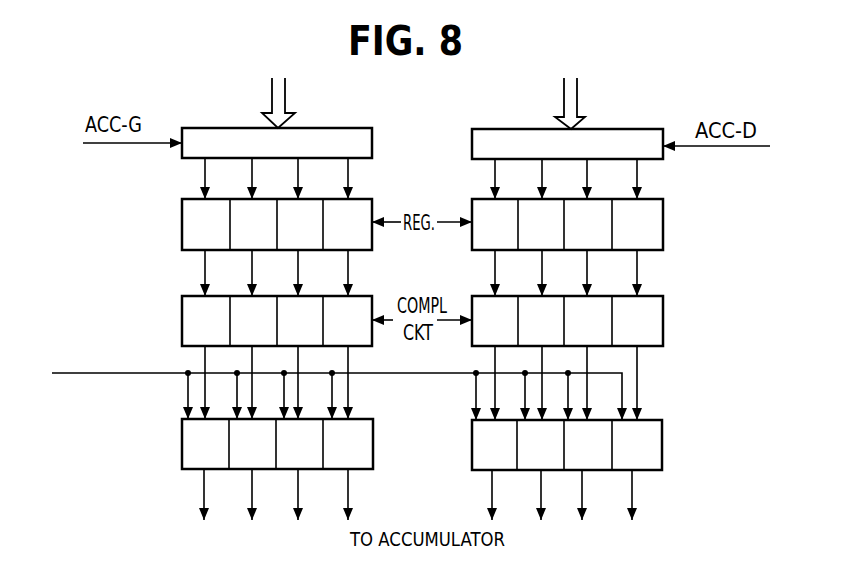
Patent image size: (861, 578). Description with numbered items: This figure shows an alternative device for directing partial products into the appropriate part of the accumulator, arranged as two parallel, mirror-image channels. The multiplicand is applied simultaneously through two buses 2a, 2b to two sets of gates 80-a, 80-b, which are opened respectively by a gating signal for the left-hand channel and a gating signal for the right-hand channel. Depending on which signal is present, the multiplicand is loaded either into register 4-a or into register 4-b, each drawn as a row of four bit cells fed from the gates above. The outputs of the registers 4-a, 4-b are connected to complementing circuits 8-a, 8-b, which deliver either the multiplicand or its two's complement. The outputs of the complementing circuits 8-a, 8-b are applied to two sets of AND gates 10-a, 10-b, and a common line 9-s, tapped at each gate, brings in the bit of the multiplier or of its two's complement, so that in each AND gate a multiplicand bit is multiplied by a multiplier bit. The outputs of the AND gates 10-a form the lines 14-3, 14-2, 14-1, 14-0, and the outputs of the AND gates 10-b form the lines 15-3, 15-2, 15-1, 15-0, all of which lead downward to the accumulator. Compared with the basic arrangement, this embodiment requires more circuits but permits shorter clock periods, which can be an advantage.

The bus 2a is at (267, 103).
The bus 2b is at (558, 103).
The set of gates 80-a is at (353, 128).
The set of gates 80-b is at (627, 129).
The register 4-a is at (182, 214).
The register 4-b is at (660, 228).
The complementing circuit 8-a is at (182, 320).
The complementing circuit 8-b is at (662, 330).
The multiplier bit line 9-s is at (331, 382).
The set of AND gates 10-a is at (182, 440).
The set of AND gates 10-b is at (662, 452).
The output line 14-3 is at (204, 485).
The output line 14-2 is at (258, 483).
The output line 14-1 is at (298, 488).
The output line 14-0 is at (348, 487).
The output line 15-3 is at (496, 475).
The output line 15-2 is at (547, 485).
The output line 15-1 is at (582, 489).
The output line 15-0 is at (632, 489).